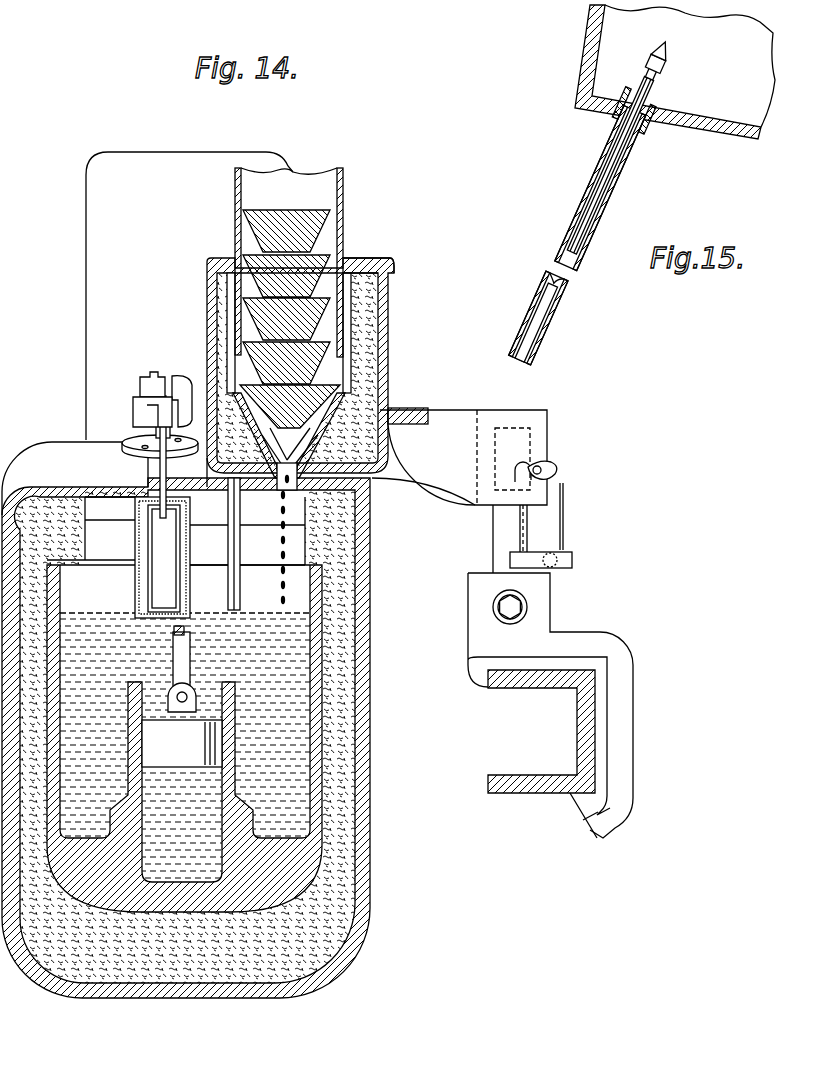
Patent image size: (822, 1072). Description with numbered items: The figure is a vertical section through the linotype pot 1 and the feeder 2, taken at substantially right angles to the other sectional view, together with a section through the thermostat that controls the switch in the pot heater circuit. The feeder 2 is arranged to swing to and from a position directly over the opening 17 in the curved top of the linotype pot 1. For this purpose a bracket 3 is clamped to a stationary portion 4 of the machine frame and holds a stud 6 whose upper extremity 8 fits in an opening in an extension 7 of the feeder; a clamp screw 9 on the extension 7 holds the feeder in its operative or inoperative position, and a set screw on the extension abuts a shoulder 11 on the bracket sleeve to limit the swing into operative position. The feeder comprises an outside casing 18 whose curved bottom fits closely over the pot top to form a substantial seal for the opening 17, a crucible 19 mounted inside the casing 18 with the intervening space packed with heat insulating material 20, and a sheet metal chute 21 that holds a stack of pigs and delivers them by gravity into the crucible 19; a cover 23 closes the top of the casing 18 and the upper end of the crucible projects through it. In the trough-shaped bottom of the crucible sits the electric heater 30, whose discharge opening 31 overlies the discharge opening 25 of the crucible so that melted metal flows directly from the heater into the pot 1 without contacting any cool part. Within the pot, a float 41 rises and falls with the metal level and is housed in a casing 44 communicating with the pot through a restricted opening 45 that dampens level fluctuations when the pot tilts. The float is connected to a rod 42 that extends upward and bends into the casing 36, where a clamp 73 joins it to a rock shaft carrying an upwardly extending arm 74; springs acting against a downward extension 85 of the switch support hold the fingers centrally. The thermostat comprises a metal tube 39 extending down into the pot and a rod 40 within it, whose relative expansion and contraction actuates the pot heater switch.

In FIG. 14, the linotype pot 1 is at (370, 740).
In FIG. 14, the feeder 2 is at (386, 325).
In FIG. 14, the bracket 3 is at (620, 672).
In FIG. 14, the stationary portion of the frame 4 is at (532, 793).
In FIG. 14, the stud 6 is at (515, 530).
In FIG. 14, the extension 7 is at (460, 420).
In FIG. 14, the upper extremity of the stud 8 is at (530, 440).
In FIG. 14, the clamp screw 9 is at (552, 468).
In FIG. 14, the shoulder 11 is at (510, 558).
In FIG. 14, the opening 17 is at (163, 463).
In FIG. 14, the casing 18 is at (212, 330).
In FIG. 14, the crucible 19 is at (237, 297).
In FIG. 14, the heat insulating material 20 is at (366, 275).
In FIG. 14, the chute 21 is at (343, 192).
In FIG. 14, the cover 23 is at (384, 265).
In FIG. 14, the discharge opening 25 is at (266, 548).
In FIG. 14, the electric heater 30 is at (335, 400).
In FIG. 14, the discharge opening 31 is at (313, 385).
In FIG. 14, the casing 36 is at (86, 268).
In FIG. 15, the casing 36 is at (578, 77).
In FIG. 14, the tube 39 is at (232, 585).
In FIG. 15, the tube 39 is at (617, 190).
In FIG. 15, the rod 40 is at (660, 80).
In FIG. 14, the float 41 is at (150, 548).
In FIG. 14, the rod 42 is at (155, 414).
In FIG. 14, the casing 44 is at (135, 530).
In FIG. 14, the restricted opening 45 is at (174, 630).
In FIG. 14, the clamp 73 is at (140, 398).
In FIG. 14, the arm 74 is at (182, 378).
In FIG. 14, the downward extension 85 is at (142, 382).